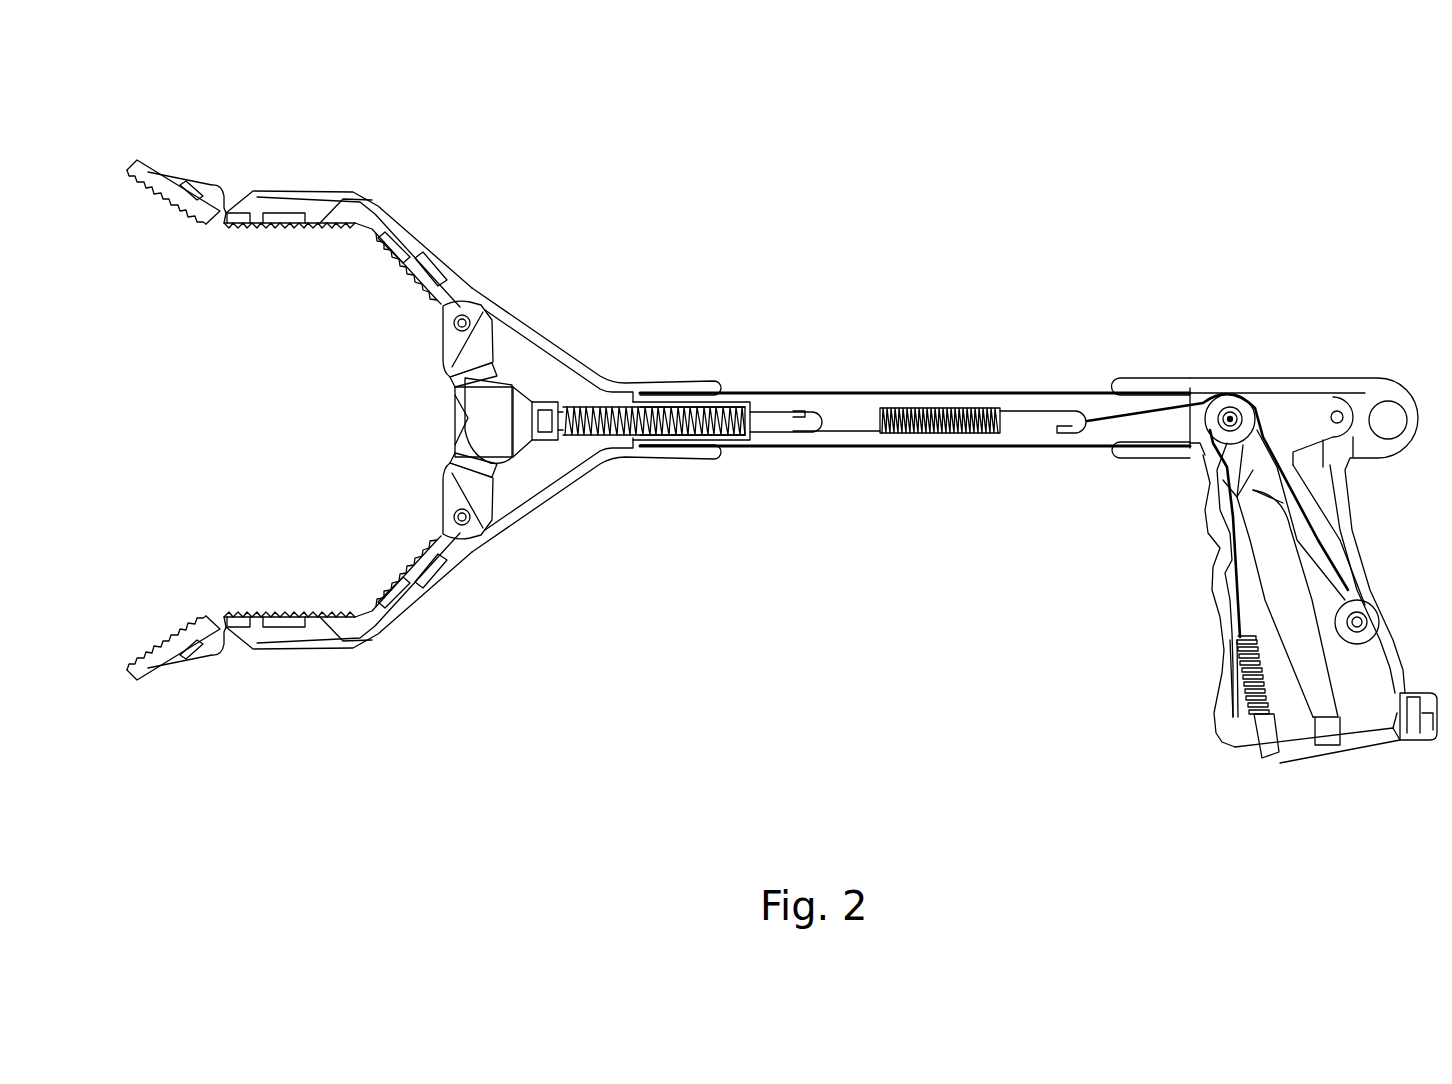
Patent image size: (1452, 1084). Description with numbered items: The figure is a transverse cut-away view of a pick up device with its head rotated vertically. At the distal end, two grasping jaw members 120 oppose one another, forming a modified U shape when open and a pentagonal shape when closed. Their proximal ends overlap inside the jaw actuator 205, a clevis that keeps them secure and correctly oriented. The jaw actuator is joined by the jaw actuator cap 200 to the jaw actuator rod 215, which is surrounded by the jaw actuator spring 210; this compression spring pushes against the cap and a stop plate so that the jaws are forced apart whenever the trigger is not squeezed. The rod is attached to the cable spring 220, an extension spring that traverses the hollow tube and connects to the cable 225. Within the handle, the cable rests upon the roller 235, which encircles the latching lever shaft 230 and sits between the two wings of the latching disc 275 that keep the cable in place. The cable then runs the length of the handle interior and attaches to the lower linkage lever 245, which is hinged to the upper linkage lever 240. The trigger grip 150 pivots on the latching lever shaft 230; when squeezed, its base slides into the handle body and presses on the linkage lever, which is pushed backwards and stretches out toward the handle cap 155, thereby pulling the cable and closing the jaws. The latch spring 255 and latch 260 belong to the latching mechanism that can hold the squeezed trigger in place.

The grasping jaw members 120 is at (421, 258).
The jaw actuator cap 200 is at (548, 400).
The jaw actuator 205 is at (530, 422).
The jaw actuator spring 210 is at (590, 438).
The jaw actuator rod 215 is at (770, 418).
The cable spring 220 is at (970, 407).
The cable 225 is at (1126, 400).
The latching lever shaft 230 is at (1231, 417).
The roller 235 is at (1205, 443).
The upper linkage lever 240 is at (1267, 523).
The lower linkage lever 245 is at (1302, 590).
The trigger grip 150 is at (1230, 687).
The latch spring 255 is at (1250, 693).
The latch 260 is at (1258, 740).
The handle cap 155 is at (1262, 772).
The latching disc 275 is at (1250, 386).